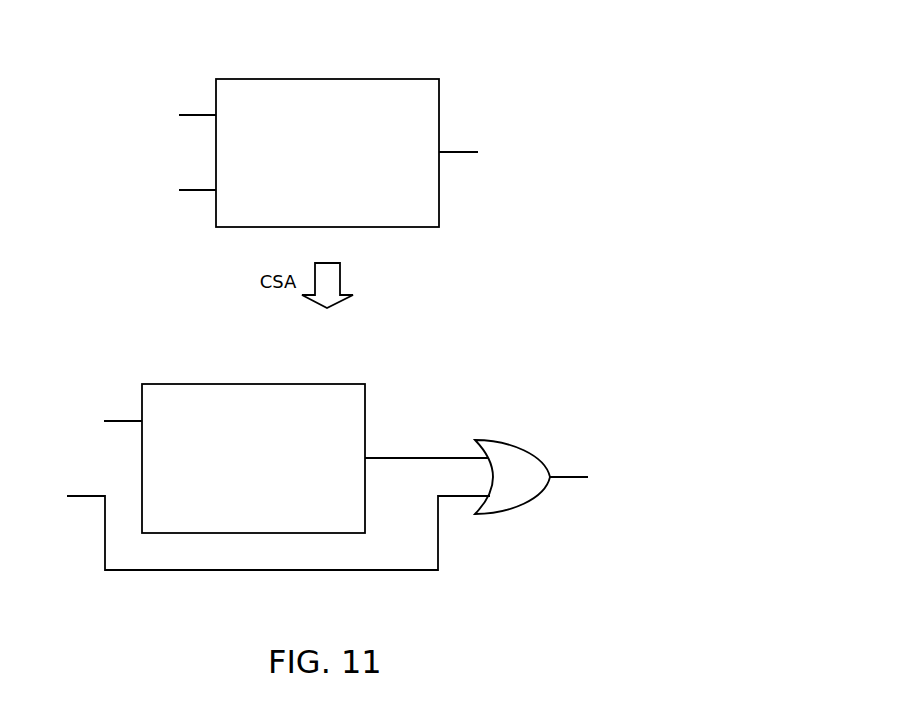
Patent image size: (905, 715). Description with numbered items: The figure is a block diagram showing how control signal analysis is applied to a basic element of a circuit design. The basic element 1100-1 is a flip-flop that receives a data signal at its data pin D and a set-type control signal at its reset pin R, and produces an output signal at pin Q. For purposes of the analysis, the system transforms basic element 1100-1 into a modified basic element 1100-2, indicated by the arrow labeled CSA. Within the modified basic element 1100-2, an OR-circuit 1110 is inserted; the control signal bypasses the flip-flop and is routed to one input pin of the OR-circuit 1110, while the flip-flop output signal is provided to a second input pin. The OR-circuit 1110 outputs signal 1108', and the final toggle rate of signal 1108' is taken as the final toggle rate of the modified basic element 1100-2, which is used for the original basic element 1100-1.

The basic element 1100-1 is at (445, 42).
The modified basic element 1100-2 is at (518, 384).
The OR-circuit 1110 is at (512, 477).
The signal 1108' is at (598, 476).